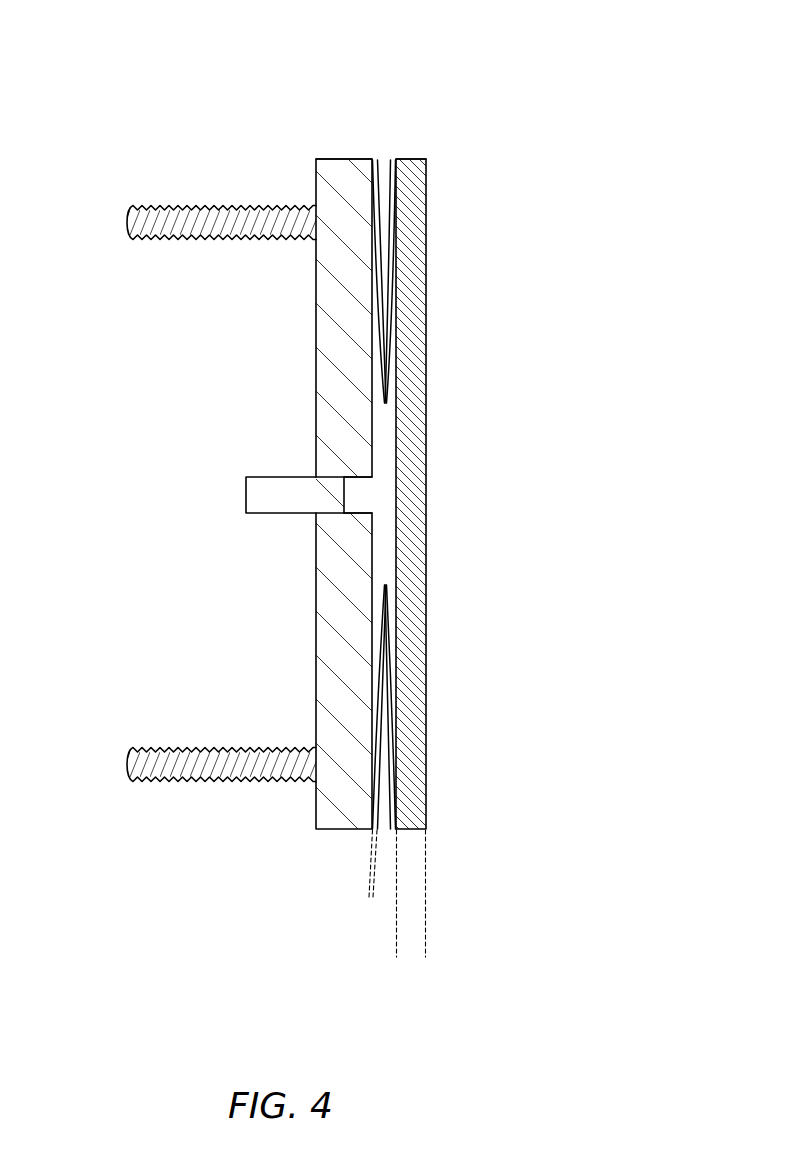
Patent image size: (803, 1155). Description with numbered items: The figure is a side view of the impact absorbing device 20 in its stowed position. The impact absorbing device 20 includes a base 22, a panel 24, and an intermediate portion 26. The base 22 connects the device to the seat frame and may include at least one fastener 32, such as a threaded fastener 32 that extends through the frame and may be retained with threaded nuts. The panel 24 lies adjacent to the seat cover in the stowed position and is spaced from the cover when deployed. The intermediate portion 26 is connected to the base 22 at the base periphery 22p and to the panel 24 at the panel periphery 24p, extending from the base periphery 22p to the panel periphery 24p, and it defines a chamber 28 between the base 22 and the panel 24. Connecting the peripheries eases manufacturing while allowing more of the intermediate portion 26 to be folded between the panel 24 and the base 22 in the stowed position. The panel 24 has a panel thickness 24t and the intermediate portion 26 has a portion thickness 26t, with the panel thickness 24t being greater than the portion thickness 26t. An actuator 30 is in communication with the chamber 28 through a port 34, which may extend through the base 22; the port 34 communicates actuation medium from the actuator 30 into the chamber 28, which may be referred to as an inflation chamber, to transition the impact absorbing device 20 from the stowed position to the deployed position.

The impact absorbing device 20 is at (56, 87).
The base 22 is at (316, 340).
The base periphery 22p is at (337, 158).
The panel 24 is at (427, 312).
The panel periphery 24p is at (411, 158).
The panel thickness 24t is at (360, 950).
The intermediate portion 26 is at (389, 165).
The portion thickness 26t is at (384, 888).
The chamber 28 is at (380, 440).
The actuator 30 is at (247, 492).
The fastener 32 is at (124, 222).
The port 34 is at (357, 497).